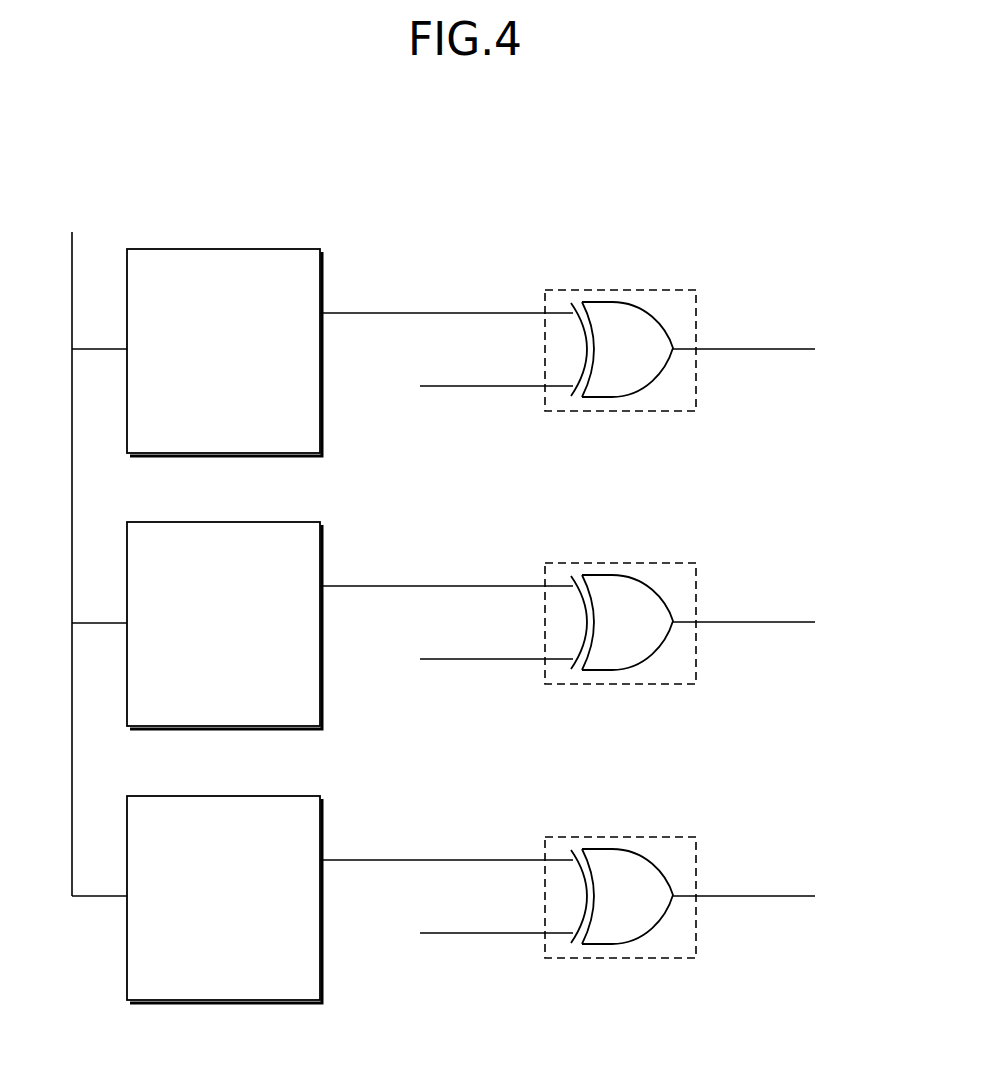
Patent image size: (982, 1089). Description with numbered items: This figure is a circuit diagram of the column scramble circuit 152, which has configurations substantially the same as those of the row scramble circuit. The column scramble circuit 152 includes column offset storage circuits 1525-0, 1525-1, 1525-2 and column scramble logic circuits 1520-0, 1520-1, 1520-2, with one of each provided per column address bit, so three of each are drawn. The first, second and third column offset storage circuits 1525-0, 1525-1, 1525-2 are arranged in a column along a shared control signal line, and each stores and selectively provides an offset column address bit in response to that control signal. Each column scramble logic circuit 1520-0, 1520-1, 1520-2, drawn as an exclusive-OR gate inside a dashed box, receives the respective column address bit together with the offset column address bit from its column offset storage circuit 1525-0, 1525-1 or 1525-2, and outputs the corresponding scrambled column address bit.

The column scramble circuit 152 is at (112, 154).
The first column offset storage circuit 1525-0 is at (305, 228).
The second column offset storage circuit 1525-1 is at (236, 601).
The third column offset storage circuit 1525-2 is at (236, 875).
The column scramble logic circuit 1520-0 is at (683, 267).
The column scramble logic circuit 1520-1 is at (636, 598).
The column scramble logic circuit 1520-2 is at (636, 872).